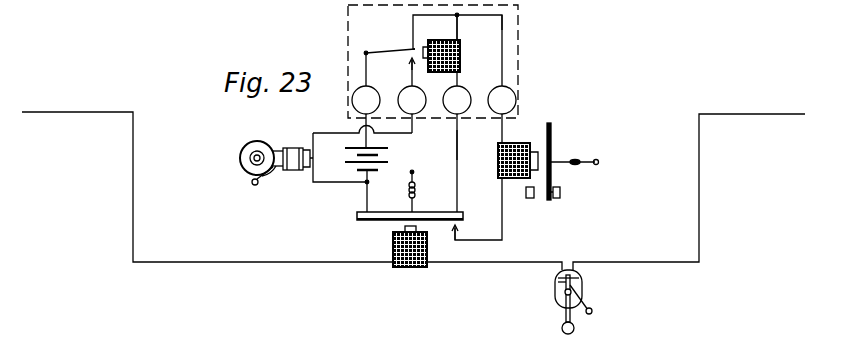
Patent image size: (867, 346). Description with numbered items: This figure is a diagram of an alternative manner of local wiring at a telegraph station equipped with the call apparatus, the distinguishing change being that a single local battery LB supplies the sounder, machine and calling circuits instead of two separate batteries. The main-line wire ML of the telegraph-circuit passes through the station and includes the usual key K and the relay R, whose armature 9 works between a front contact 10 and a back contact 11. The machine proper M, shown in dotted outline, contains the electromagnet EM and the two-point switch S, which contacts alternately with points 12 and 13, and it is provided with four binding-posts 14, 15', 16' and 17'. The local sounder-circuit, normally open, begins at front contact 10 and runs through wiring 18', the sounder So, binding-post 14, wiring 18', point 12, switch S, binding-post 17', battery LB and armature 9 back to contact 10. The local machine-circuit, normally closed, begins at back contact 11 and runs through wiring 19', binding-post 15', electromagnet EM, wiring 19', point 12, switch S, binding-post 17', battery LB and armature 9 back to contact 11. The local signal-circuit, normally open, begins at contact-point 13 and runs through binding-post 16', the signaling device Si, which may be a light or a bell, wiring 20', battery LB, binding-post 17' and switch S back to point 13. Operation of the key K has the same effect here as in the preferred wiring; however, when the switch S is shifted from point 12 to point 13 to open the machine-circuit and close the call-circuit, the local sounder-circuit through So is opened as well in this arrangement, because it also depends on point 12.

The main-line wire ML is at (413, 191).
The machine M is at (445, 61).
The binding-post 17' is at (366, 99).
The binding-post 16' is at (412, 95).
The binding-post 15' is at (457, 112).
The binding-post 14 is at (464, 127).
The two-point switch S is at (390, 43).
The switch contact-point 12 is at (413, 48).
The switch contact-point 13 is at (410, 62).
The electromagnet EM is at (456, 56).
The machine-circuit wiring 19' is at (468, 87).
The sounder-circuit wiring 18' is at (518, 122).
The local battery LB is at (362, 169).
The signal-circuit wiring 20' is at (335, 166).
The local signaling device Si is at (271, 171).
The relay armature 9 is at (398, 191).
The back contact 11 is at (463, 212).
The front contact 10 is at (459, 229).
The relay R is at (410, 256).
The sounder So is at (562, 161).
The key K is at (580, 302).